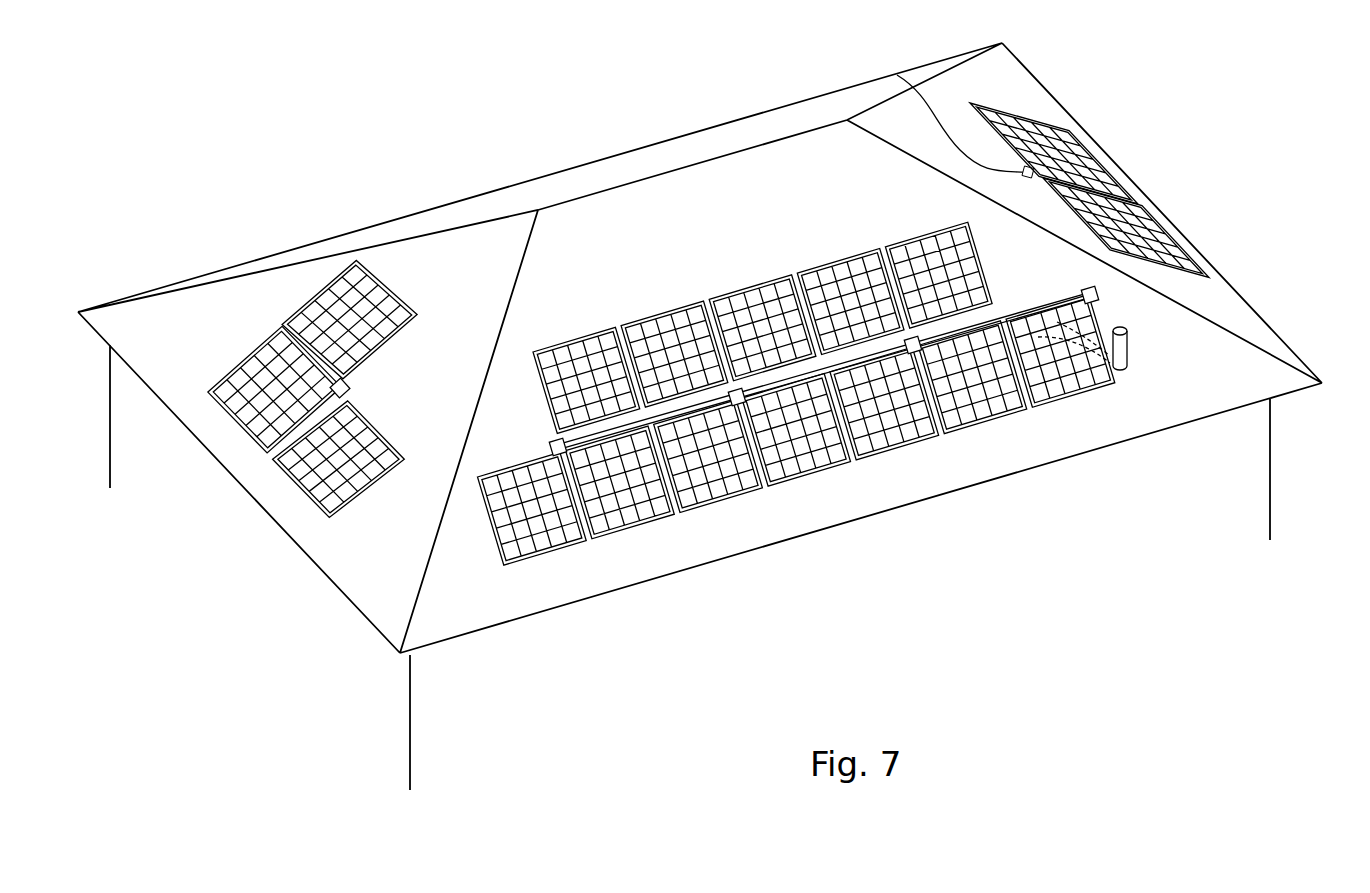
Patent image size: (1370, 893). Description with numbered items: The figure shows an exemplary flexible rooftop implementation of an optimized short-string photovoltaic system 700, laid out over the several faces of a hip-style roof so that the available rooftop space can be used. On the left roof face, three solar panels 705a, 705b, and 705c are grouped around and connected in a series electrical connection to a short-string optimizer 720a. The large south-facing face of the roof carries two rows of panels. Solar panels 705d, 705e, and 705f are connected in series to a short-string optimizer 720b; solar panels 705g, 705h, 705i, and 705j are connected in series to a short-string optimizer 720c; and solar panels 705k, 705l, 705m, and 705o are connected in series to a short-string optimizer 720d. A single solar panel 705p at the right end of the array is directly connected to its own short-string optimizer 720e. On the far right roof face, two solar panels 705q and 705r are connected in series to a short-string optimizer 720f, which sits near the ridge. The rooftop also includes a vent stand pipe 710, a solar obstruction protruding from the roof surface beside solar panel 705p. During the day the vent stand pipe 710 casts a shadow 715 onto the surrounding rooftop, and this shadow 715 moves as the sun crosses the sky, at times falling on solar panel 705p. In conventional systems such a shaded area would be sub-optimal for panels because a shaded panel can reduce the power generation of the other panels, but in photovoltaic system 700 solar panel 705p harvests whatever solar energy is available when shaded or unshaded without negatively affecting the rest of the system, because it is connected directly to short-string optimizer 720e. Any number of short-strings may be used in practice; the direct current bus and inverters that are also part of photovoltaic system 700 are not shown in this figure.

The photovoltaic system 700 is at (230, 152).
The solar panel 705a is at (248, 354).
The solar panel 705b is at (303, 490).
The solar panel 705c is at (388, 290).
The solar panel 705d is at (547, 552).
The solar panel 705e is at (637, 533).
The solar panel 705f is at (572, 341).
The solar panel 705g is at (663, 313).
The solar panel 705h is at (745, 288).
The solar panel 705i is at (727, 507).
The solar panel 705j is at (830, 470).
The solar panel 705k is at (833, 262).
The solar panel 705l is at (905, 242).
The solar panel 705m is at (910, 452).
The solar panel 705o is at (990, 430).
The solar panel 705p is at (1065, 408).
The solar panel 705q is at (1172, 240).
The solar panel 705r is at (1087, 150).
The vent stand pipe 710 is at (1128, 355).
The shadow 715 is at (1057, 322).
The short-string optimizer 720a is at (350, 388).
The short-string optimizer 720b is at (551, 441).
The short-string optimizer 720c is at (740, 402).
The short-string optimizer 720d is at (920, 350).
The short-string optimizer 720e is at (1083, 288).
The short-string optimizer 720f is at (897, 73).